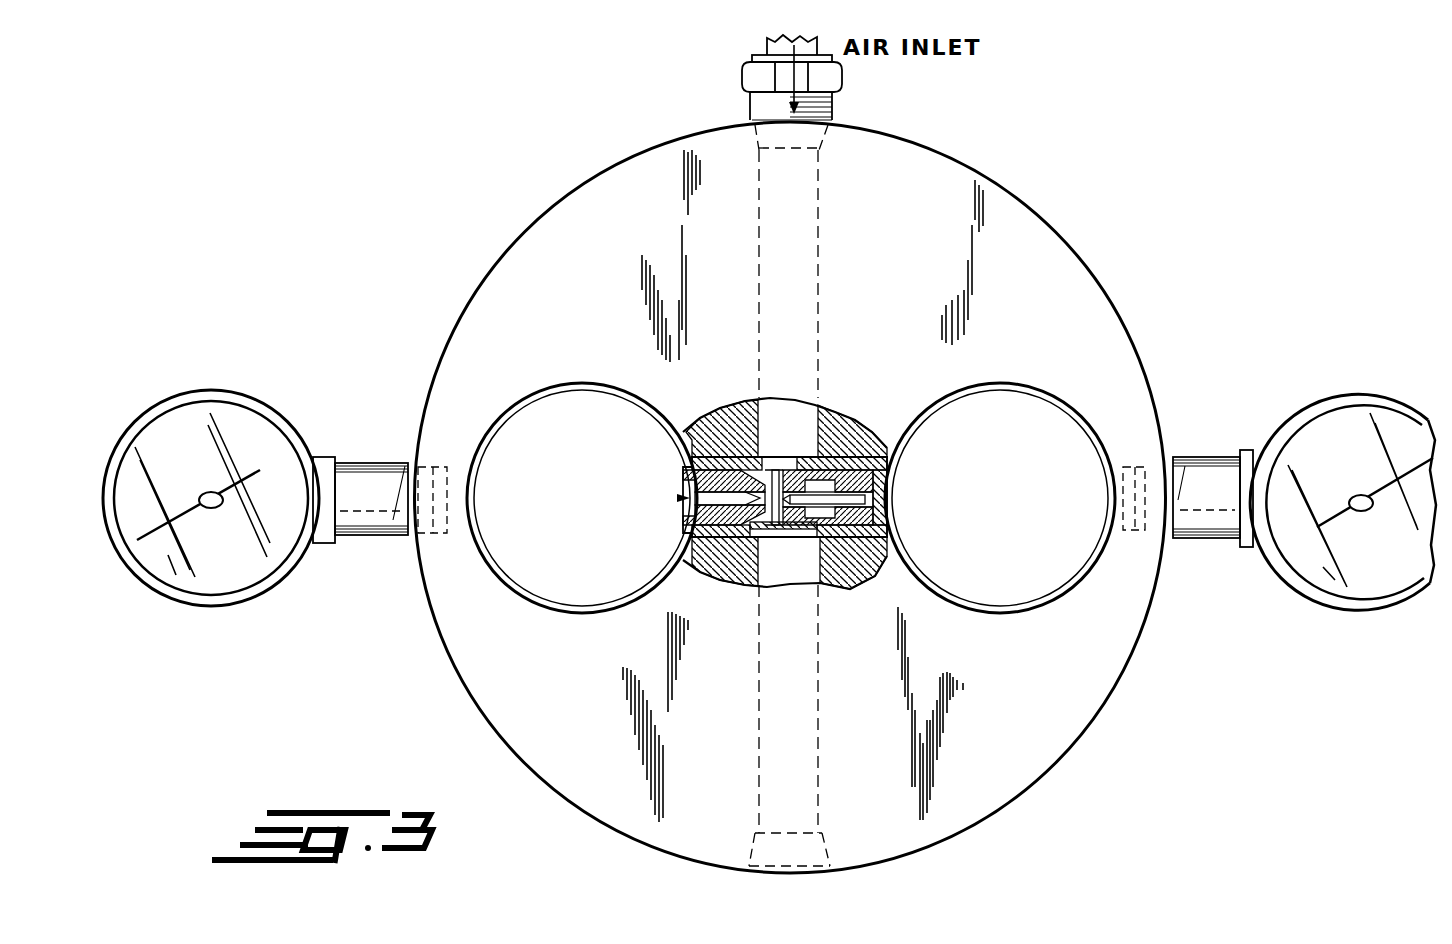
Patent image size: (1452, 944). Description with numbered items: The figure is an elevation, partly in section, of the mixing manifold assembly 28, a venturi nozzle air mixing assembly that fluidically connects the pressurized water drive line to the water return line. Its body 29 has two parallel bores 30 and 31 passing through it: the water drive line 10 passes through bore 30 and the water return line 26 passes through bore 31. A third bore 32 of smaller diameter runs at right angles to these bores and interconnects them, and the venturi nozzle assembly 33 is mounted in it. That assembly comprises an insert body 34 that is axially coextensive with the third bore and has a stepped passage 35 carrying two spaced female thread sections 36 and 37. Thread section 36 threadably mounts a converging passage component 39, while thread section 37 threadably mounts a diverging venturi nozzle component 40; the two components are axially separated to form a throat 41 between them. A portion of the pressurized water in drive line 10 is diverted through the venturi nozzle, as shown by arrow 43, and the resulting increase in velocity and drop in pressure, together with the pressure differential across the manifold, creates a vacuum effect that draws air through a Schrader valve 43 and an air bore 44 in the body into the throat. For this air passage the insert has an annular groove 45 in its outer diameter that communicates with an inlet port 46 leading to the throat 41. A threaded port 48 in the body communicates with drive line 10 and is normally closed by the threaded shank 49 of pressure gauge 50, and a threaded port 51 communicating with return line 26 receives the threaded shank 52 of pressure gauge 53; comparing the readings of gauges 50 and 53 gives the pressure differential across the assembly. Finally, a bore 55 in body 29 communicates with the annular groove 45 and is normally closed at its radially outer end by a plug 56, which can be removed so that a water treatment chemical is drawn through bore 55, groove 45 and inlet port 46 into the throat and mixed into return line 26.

The water drive line 10 is at (533, 505).
The water return line 26 is at (994, 505).
The mixing manifold assembly 28 is at (570, 175).
The body 29 is at (866, 263).
The bore 30 is at (548, 388).
The bore 31 is at (1000, 384).
The third bore 32 is at (700, 432).
The venturi nozzle assembly 33 is at (805, 443).
The insert body 34 is at (728, 428).
The stepped passage 35 is at (752, 560).
The female thread section 36 is at (718, 560).
The female thread section 37 is at (862, 553).
The converging passage component 39 is at (675, 499).
The diverging venturi nozzle component 40 is at (815, 525).
The throat 41 is at (772, 485).
The Schrader valve 43 is at (672, 496).
The air bore 44 is at (771, 307).
The annular groove 45 is at (855, 430).
The inlet port 46 is at (742, 400).
The threaded port 48 is at (412, 458).
The threaded shank 49 is at (400, 540).
The pressure gauge 50 is at (232, 412).
The threaded port 51 is at (1150, 540).
The threaded shank 52 is at (1178, 455).
The pressure gauge 53 is at (1352, 420).
The bore 55 is at (822, 715).
The plug 56 is at (745, 852).